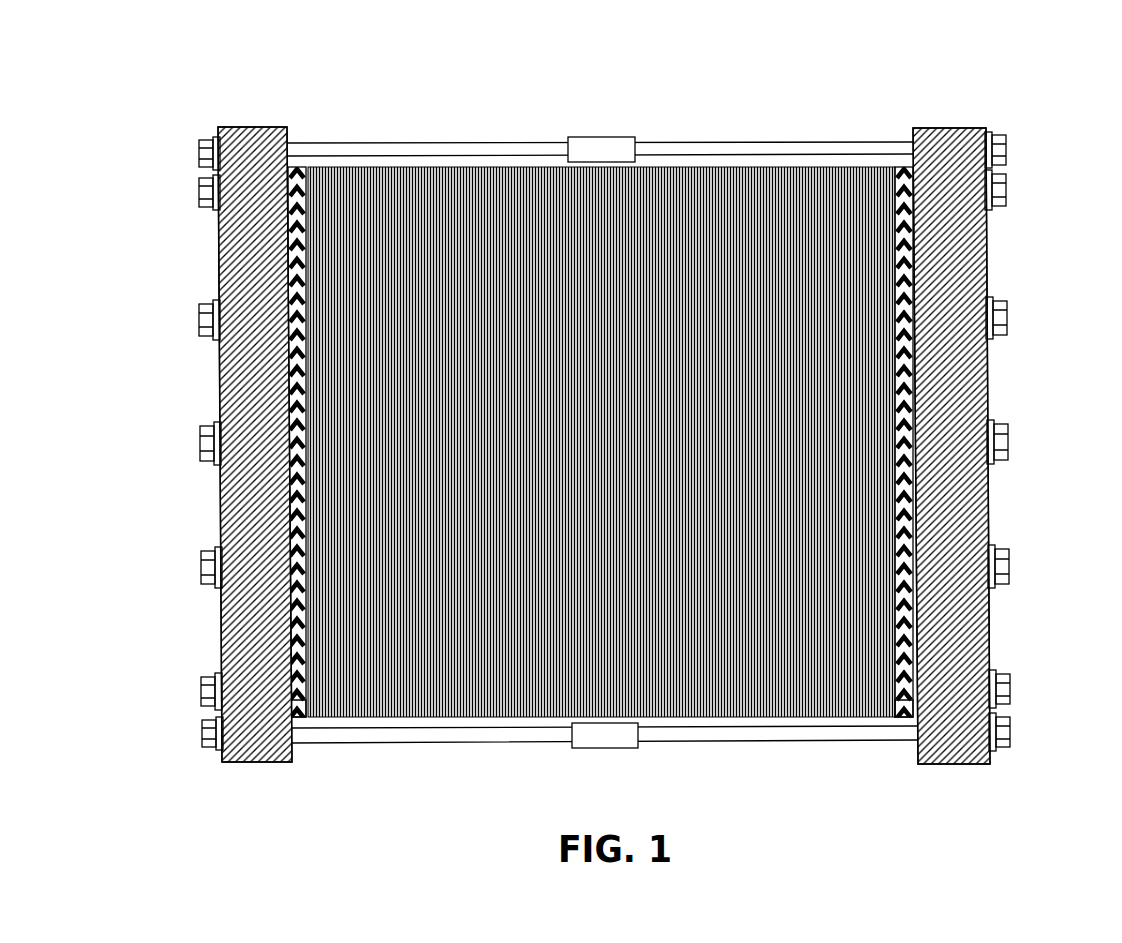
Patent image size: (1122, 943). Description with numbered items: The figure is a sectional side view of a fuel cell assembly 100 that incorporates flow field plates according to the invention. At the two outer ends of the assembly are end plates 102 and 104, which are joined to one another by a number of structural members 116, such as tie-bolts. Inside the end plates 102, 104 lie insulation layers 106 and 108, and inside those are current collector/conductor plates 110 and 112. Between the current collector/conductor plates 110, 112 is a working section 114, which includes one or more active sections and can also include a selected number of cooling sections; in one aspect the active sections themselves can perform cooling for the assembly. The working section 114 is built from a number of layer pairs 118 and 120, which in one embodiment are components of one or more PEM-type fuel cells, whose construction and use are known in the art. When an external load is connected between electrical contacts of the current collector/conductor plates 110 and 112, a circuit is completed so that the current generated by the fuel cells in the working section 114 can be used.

The fuel cell assembly 100 is at (170, 127).
The end plate 102 is at (252, 128).
The end plate 104 is at (960, 128).
The insulation layer 106 is at (293, 542).
The insulation layer 108 is at (915, 530).
The current collector/conductor plate 110 is at (300, 715).
The current collector/conductor plate 112 is at (888, 717).
The working section 114 is at (878, 133).
The structural member 116 is at (685, 145).
The layer pair 118 is at (437, 715).
The layer pair 120 is at (443, 715).